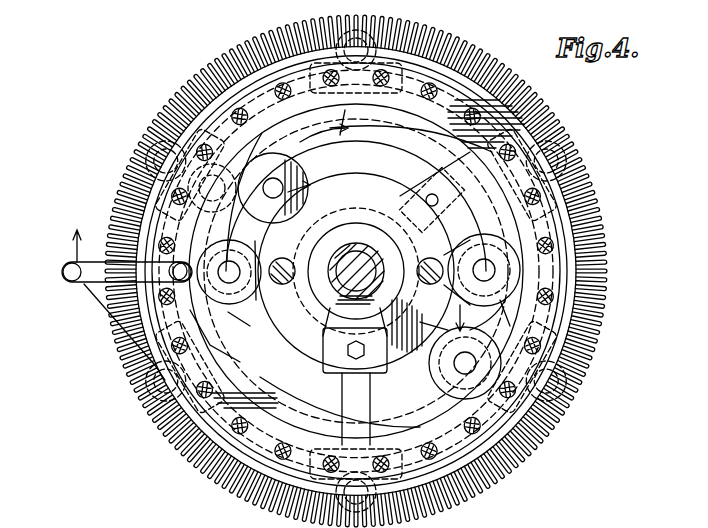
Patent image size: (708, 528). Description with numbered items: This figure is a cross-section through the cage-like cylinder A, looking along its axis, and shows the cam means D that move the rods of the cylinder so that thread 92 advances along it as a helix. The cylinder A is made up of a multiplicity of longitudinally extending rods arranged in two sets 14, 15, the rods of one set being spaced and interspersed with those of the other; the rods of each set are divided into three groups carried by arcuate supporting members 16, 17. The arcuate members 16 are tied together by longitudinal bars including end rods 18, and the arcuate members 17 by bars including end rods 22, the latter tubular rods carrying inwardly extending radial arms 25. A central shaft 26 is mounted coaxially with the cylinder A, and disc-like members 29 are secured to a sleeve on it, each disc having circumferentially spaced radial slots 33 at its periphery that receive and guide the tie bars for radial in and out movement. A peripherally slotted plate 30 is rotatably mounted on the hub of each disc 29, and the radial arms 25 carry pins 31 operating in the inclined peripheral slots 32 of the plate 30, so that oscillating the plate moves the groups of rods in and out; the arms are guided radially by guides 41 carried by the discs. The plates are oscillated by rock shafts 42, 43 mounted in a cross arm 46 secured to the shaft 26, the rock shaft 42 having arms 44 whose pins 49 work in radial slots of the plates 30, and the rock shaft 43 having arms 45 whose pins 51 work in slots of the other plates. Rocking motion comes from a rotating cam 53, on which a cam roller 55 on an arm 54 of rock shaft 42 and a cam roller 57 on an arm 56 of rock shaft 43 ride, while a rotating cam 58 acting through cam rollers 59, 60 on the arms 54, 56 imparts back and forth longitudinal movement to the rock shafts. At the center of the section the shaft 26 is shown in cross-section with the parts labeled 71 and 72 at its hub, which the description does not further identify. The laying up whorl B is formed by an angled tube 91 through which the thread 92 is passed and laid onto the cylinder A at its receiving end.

The set of rods 14 is at (430, 28).
The set of rods 15 is at (478, 60).
The arcuate supporting members 16 is at (185, 112).
The arcuate supporting members 17 is at (292, 70).
The end rod 18 is at (364, 259).
The end rod 22 is at (210, 172).
The radial arms 25 is at (225, 208).
The shaft 26 is at (330, 300).
The disc-like members 29 is at (505, 78).
The peripherally slotted plate 30 is at (294, 338).
The pins 31 is at (258, 236).
The inclined peripheral slots 32 is at (400, 212).
The radial slots 33 is at (357, 231).
The guides 41 is at (374, 384).
The rock shaft 42 is at (488, 252).
The rock shaft 43 is at (215, 290).
The arms 44 is at (436, 300).
The arms 45 is at (232, 292).
The cross arm 46 is at (284, 284).
The pins 49 is at (428, 284).
The pins 51 is at (247, 280).
The rotating cam 53 is at (439, 341).
The arm 54 is at (495, 305).
The cam roller 55 is at (474, 318).
The arm 56 is at (212, 214).
The cam roller 57 is at (284, 162).
The rotating cam 58 is at (324, 138).
The cam roller 59 is at (448, 398).
The cam roller 60 is at (310, 176).
The shaft 71 is at (352, 256).
The key 72 is at (362, 256).
The tube 91 is at (180, 282).
The thread 92 is at (142, 150).
The cage-like cylinder A is at (619, 270).
The whorl B is at (60, 280).
The cam means D is at (356, 271).